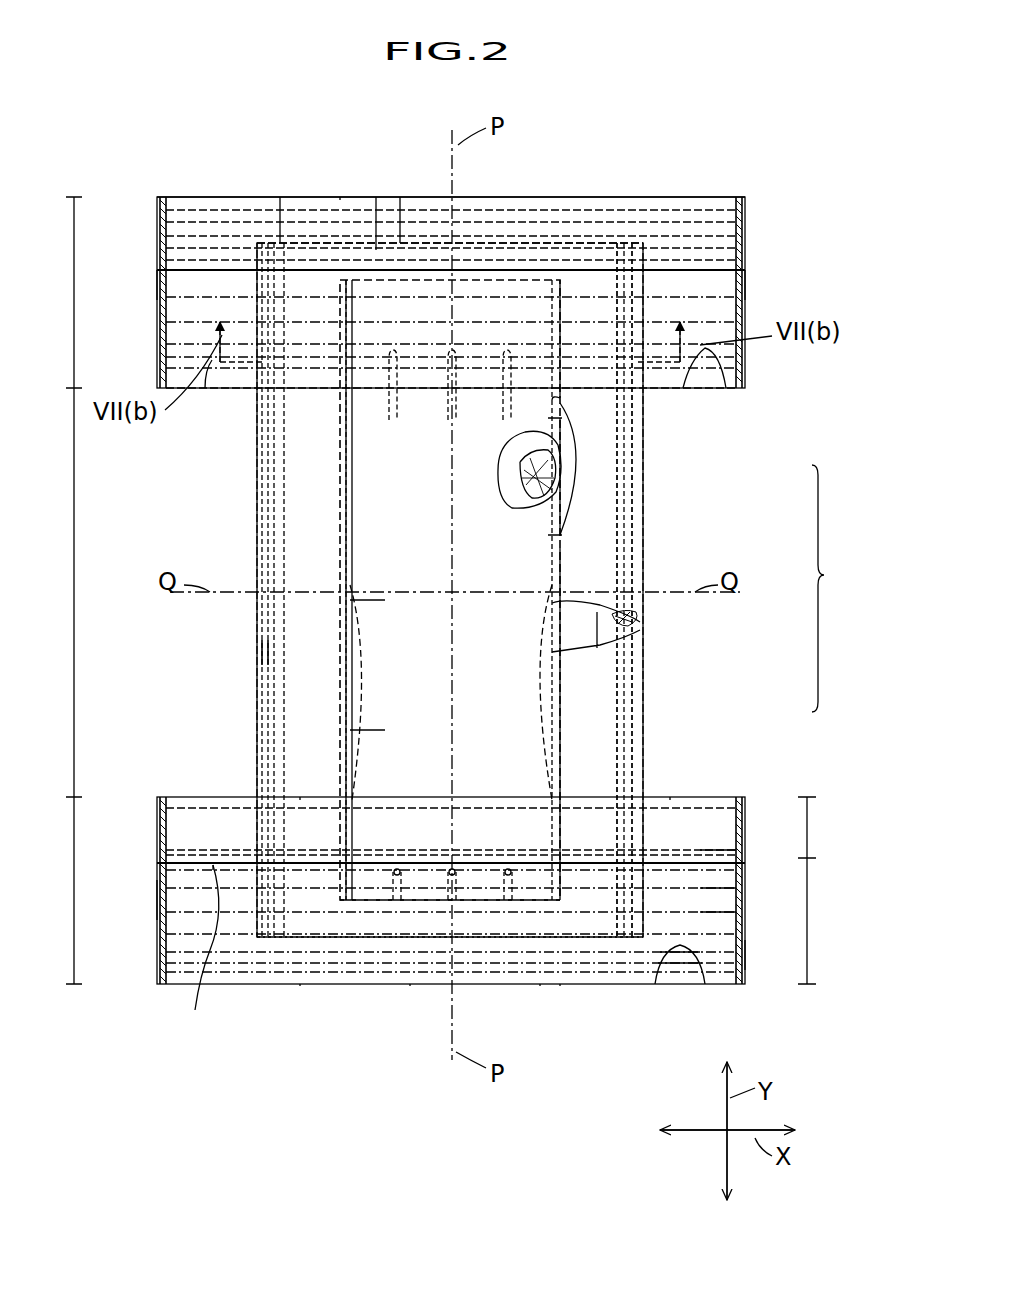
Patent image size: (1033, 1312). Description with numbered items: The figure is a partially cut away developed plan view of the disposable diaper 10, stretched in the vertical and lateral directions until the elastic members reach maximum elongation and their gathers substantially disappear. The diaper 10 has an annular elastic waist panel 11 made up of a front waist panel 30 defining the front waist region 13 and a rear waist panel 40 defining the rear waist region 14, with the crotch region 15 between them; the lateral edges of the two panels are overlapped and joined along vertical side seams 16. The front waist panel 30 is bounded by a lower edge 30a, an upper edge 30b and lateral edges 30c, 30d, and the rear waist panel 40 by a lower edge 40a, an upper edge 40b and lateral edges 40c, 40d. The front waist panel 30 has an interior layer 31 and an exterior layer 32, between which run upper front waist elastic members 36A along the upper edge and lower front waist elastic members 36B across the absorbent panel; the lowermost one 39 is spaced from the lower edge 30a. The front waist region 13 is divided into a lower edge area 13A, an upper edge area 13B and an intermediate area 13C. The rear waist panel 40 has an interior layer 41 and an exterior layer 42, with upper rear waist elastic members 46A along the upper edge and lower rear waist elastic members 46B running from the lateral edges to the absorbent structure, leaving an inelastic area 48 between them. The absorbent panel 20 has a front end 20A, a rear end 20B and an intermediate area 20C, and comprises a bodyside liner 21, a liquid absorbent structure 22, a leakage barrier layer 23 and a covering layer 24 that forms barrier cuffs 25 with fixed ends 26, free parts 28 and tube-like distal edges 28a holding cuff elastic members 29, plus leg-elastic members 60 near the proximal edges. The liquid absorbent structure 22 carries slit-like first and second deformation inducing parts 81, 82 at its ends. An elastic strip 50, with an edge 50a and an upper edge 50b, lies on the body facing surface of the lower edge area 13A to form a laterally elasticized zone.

The disposable diaper 10 is at (445, 590).
The annular elastic waist panel 11 is at (836, 588).
The front waist region 13 is at (74, 895).
The lower edge area 13A is at (808, 828).
The upper edge area 13B is at (808, 958).
The intermediate area 13C is at (808, 895).
The rear waist region 14 is at (74, 298).
The crotch region 15 is at (74, 585).
The side seams 16 is at (162, 252).
The absorbent panel 20 is at (255, 488).
The front end of absorbent panel 20A is at (353, 986).
The rear end of absorbent panel 20B is at (505, 280).
The intermediate area of absorbent panel 20C is at (385, 607).
The bodyside liner 21 is at (385, 737).
The liquid absorbent structure 22 is at (520, 478).
The leakage barrier layer 23 is at (578, 640).
The covering layer 24 is at (604, 538).
The barrier cuffs 25 is at (262, 538).
The front and rear ends of barrier cuffs 26 is at (294, 197).
The free parts 28 is at (262, 538).
The tube-like distal edge 28a is at (352, 498).
The cuff elastic members 29 is at (365, 672).
The front waist panel 30 is at (700, 795).
The lower edge of front waist panel 30a is at (210, 797).
The upper edge of front waist panel 30b is at (300, 986).
The lateral edge of front waist panel 30c is at (162, 900).
The lateral edge of front waist panel 30d is at (745, 965).
The interior layer 31 is at (680, 986).
The exterior layer 32 is at (525, 986).
The upper front waist elastic members 36A is at (416, 986).
The lower front waist elastic members 36B is at (705, 912).
The lowermost lower front waist elastic member 39 is at (720, 852).
The rear waist panel 40 is at (710, 392).
The lower edge of rear waist panel 40a is at (205, 390).
The upper edge of rear waist panel 40b is at (340, 197).
The lateral edge of rear waist panel 40c is at (162, 297).
The lateral edge of rear waist panel 40d is at (746, 308).
The interior layer 41 is at (743, 350).
The exterior layer 42 is at (660, 197).
The upper rear waist elastic members 46A is at (394, 197).
The lower rear waist elastic members 46B is at (162, 362).
The inelastic area 48 is at (376, 197).
The elastic strip 50 is at (195, 840).
The inner edge of back waist sheet 50a is at (670, 800).
The upper edge of elastic strip 50b is at (210, 980).
The leg-elastic members 60 is at (270, 660).
The first deformation inducing parts 81 is at (505, 870).
The second deformation inducing parts 82 is at (505, 350).